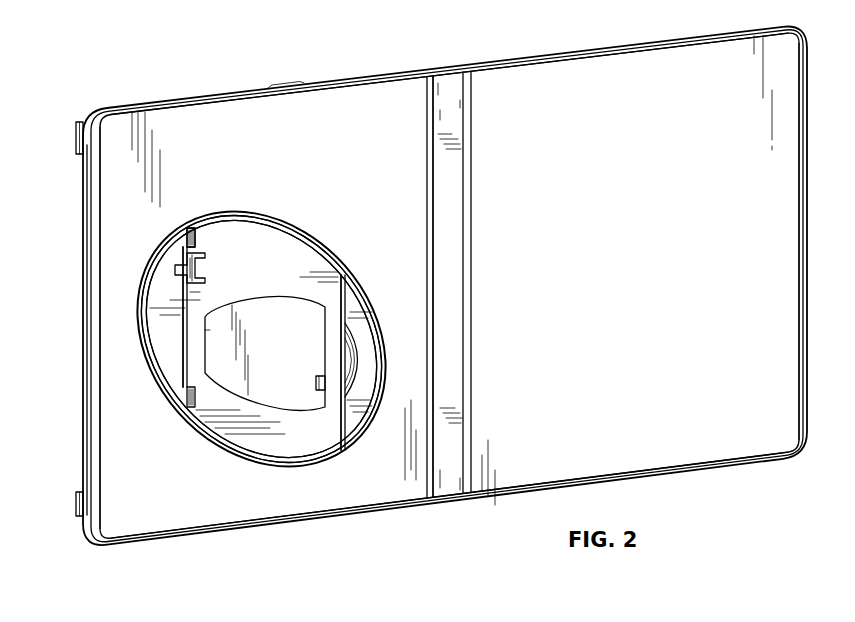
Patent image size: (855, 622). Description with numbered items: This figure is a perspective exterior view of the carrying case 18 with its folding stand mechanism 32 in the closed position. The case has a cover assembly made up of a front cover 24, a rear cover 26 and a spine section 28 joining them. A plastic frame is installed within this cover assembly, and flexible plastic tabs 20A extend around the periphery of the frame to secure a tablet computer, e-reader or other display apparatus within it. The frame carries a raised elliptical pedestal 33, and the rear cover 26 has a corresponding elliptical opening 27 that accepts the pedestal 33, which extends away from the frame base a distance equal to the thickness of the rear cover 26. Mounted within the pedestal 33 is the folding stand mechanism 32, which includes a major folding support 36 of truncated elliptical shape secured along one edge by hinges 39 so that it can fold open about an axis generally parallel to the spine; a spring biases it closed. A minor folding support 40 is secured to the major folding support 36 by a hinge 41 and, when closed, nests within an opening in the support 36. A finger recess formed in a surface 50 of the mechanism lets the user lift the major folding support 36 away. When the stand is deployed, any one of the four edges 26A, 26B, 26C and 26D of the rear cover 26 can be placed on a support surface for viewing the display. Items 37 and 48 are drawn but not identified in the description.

The carrying case 18 is at (261, 72).
The flexible plastic tabs 20A is at (88, 113).
The front cover 24 is at (631, 253).
The rear cover 26 is at (276, 143).
The edge of rear cover 26A is at (287, 93).
The edge of rear cover 26B is at (432, 188).
The edge of rear cover 26C is at (333, 516).
The edge of rear cover 26D is at (86, 287).
The elliptical shaped opening 27 is at (250, 455).
The spine section 28 is at (446, 100).
The folding stand mechanism 32 is at (306, 228).
The pedestal 33 is at (217, 443).
The major folding support 36 is at (279, 266).
The retaining clip 37 is at (183, 307).
The hinges 39 is at (192, 300).
The minor folding support 40 is at (281, 334).
The hinge 41 is at (325, 350).
The left guide rail 48 is at (175, 358).
The surface of the mechanism 50 is at (353, 307).